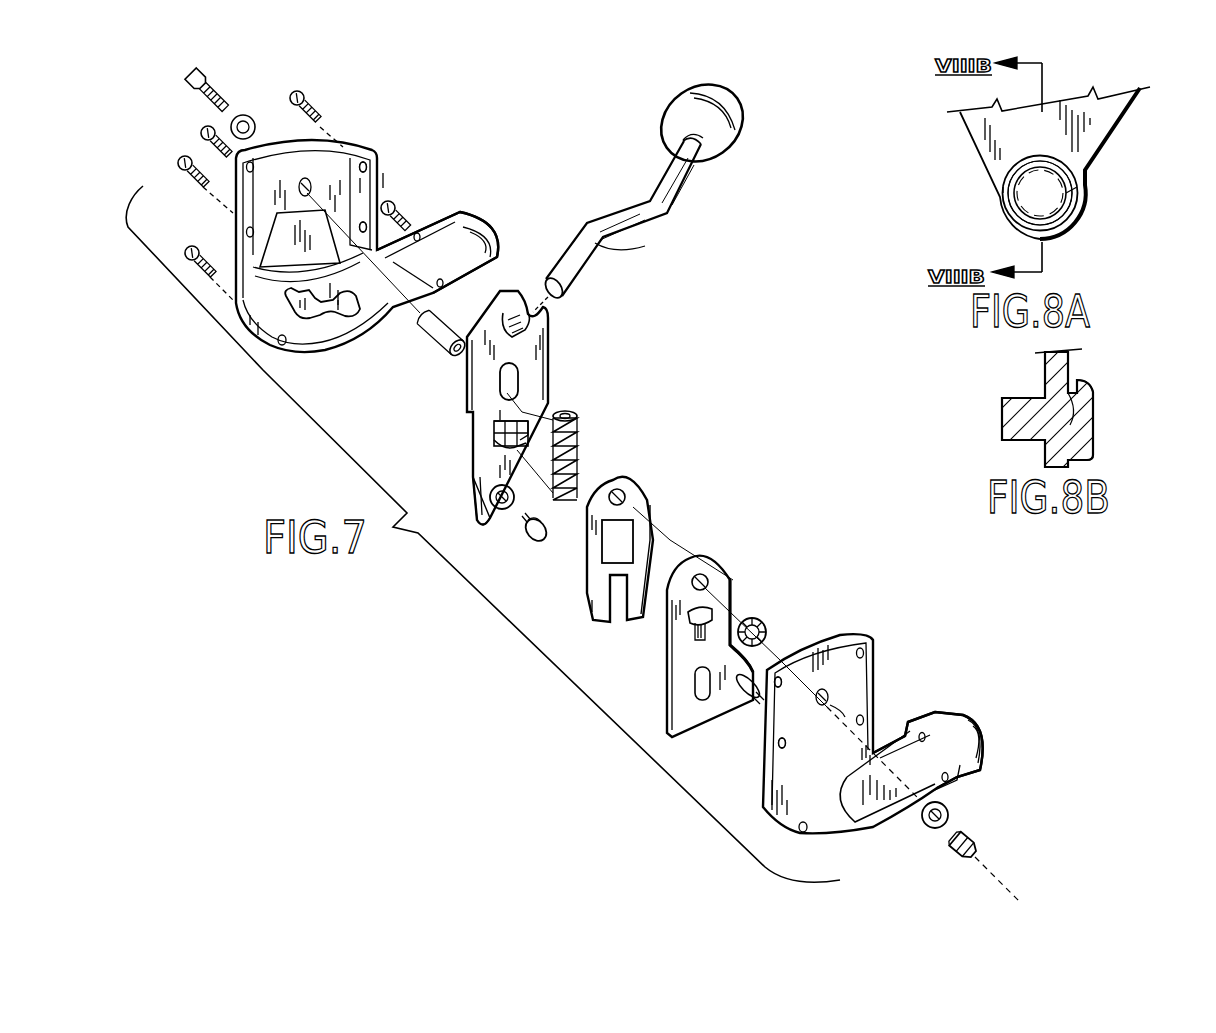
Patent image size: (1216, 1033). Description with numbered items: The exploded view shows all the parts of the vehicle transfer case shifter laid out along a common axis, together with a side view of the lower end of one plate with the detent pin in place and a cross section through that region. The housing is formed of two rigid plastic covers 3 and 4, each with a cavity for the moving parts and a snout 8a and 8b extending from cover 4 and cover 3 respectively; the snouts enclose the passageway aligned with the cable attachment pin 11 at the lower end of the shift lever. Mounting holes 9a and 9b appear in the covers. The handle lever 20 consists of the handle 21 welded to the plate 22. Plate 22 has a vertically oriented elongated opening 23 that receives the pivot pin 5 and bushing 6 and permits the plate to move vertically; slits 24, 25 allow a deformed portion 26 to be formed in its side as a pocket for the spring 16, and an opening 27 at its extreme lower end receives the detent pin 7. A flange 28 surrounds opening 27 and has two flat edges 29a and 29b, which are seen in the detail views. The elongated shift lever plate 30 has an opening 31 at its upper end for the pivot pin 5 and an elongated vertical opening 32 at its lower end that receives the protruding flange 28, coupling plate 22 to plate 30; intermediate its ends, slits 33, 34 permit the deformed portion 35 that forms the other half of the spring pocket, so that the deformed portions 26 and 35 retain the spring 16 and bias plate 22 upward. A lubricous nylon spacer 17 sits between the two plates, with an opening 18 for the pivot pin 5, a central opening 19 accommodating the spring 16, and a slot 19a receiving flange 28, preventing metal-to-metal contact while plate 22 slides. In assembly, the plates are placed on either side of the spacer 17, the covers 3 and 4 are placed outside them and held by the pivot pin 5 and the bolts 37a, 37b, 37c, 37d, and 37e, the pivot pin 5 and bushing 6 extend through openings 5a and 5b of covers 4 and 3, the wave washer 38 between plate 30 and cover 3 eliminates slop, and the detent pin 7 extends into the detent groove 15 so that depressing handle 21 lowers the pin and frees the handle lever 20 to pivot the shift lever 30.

In FIG. 7, the cover 3 is at (873, 663).
In FIG. 7, the cover 4 is at (232, 302).
In FIG. 7, the pivot pin 5 is at (213, 83).
In FIG. 7, the opening 5a is at (302, 180).
In FIG. 7, the opening 5b is at (830, 695).
In FIG. 7, the bushing 6 is at (427, 327).
In FIG. 7, the detent pin 7 is at (528, 542).
In FIG. 8A, the detent pin 7 is at (1058, 228).
In FIG. 8B, the detent pin 7 is at (1002, 425).
In FIG. 7, the snout 8a is at (447, 207).
In FIG. 7, the snout 8b is at (945, 717).
In FIG. 7, the mounting holes 9a is at (366, 222).
In FIG. 7, the mounting holes 9b is at (783, 688).
In FIG. 7, the cable attachment pin 11 is at (770, 662).
In FIG. 7, the detent groove 15 is at (322, 317).
In FIG. 7, the spring 16 is at (577, 437).
In FIG. 7, the nylon spacer 17 is at (643, 500).
In FIG. 7, the opening 18 is at (623, 480).
In FIG. 7, the central opening 19 is at (627, 533).
In FIG. 7, the slot 19a is at (613, 587).
In FIG. 7, the handle lever 20 is at (645, 190).
In FIG. 7, the handle 21 is at (582, 291).
In FIG. 7, the plate 22 is at (560, 333).
In FIG. 8A, the plate 22 is at (1115, 110).
In FIG. 7, the elongated opening 23 is at (514, 370).
In FIG. 7, the slit 24 is at (522, 414).
In FIG. 7, the slit 25 is at (495, 450).
In FIG. 7, the deformed portion 26 is at (493, 433).
In FIG. 7, the opening 27 is at (490, 503).
In FIG. 8A, the opening 27 is at (1002, 227).
In FIG. 8B, the opening 27 is at (1093, 420).
In FIG. 7, the flange 28 is at (490, 517).
In FIG. 8A, the flange 28 is at (1073, 163).
In FIG. 8B, the flange 28 is at (1073, 385).
In FIG. 8A, the flat edge 29a is at (1077, 187).
In FIG. 8A, the flat edge 29b is at (1003, 190).
In FIG. 7, the shift lever plate 30 is at (733, 572).
In FIG. 7, the opening 31 is at (703, 557).
In FIG. 7, the elongated vertical opening 32 is at (693, 683).
In FIG. 7, the slit 33 is at (687, 610).
In FIG. 7, the slit 34 is at (692, 637).
In FIG. 7, the deformed portion 35 is at (737, 618).
In FIG. 7, the bolt 37a is at (313, 90).
In FIG. 7, the bolt 37b is at (200, 130).
In FIG. 7, the bolt 37c is at (182, 167).
In FIG. 7, the bolt 37d is at (193, 247).
In FIG. 7, the bolt 37e is at (392, 203).
In FIG. 7, the wave washer 38 is at (765, 620).